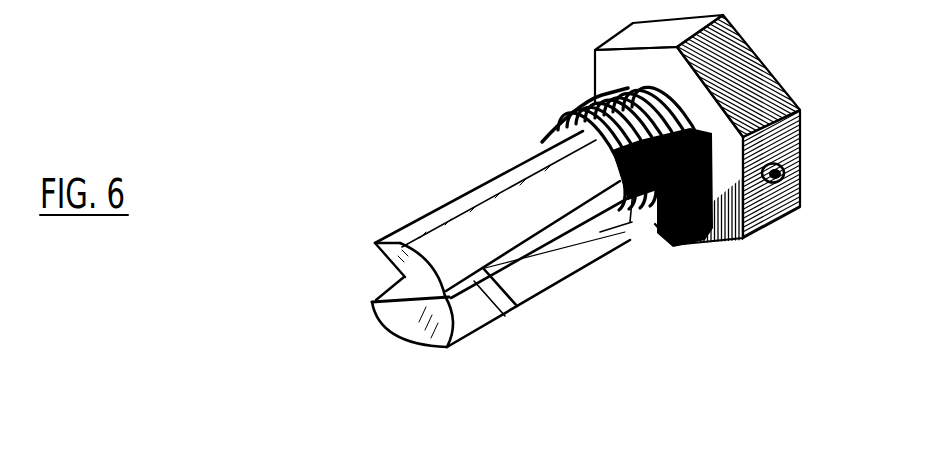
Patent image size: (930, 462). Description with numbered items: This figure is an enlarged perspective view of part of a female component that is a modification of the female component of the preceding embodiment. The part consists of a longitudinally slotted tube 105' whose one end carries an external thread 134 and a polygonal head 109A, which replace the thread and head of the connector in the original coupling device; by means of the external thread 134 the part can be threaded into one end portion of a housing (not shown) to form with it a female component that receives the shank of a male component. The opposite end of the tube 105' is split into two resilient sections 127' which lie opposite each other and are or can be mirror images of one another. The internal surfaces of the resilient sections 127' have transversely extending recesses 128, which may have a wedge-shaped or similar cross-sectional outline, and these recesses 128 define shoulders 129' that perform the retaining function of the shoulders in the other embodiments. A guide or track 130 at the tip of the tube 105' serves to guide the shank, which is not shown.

The longitudinally slotted tube 105' is at (463, 218).
The resilient sections 127' is at (396, 318).
The guide or track 130 is at (373, 299).
The shoulders 129' is at (559, 311).
The transversely extending recesses 128 is at (509, 310).
The external thread 134 is at (658, 238).
The polygonal head 109A is at (695, 252).